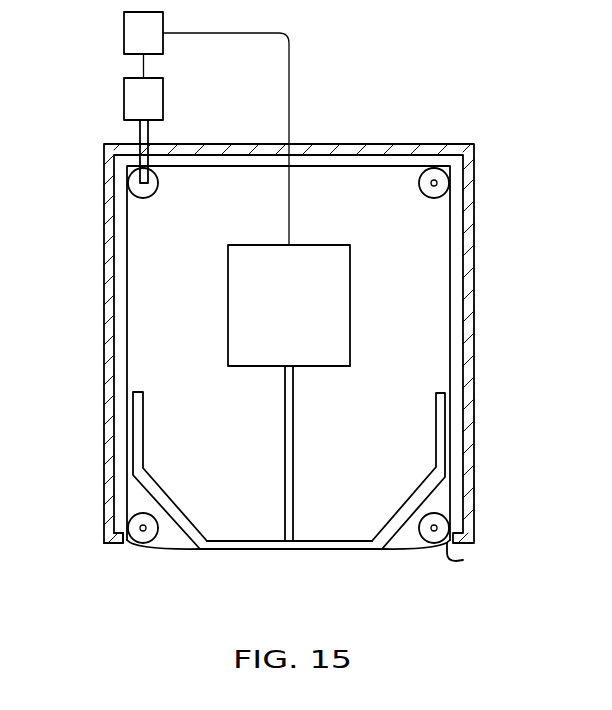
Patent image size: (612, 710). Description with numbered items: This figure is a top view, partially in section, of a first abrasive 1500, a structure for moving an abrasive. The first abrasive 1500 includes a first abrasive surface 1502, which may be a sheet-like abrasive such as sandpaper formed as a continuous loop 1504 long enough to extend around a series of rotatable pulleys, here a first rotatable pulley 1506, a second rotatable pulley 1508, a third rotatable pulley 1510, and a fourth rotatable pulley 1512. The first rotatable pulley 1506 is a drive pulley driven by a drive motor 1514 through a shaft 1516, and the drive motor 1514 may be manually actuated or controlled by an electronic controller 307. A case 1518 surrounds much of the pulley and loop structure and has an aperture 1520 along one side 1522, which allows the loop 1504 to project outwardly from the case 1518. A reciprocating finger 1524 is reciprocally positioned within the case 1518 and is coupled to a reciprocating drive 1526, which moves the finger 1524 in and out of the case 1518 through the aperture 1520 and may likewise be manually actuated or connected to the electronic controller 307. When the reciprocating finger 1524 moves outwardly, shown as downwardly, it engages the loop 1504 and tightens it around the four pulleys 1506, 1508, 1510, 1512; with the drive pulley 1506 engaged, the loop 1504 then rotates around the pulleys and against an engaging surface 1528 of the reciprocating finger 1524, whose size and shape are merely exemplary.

The electronic controller 307 is at (130, 32).
The first abrasive 1500 is at (294, 319).
The first abrasive surface 1502 is at (230, 549).
The continuous loop 1504 is at (400, 166).
The first rotatable pulley 1506 is at (131, 194).
The second rotatable pulley 1508 is at (446, 183).
The third rotatable pulley 1510 is at (447, 528).
The fourth rotatable pulley 1512 is at (143, 539).
The drive motor 1514 is at (130, 106).
The drive shaft 1516 is at (143, 183).
The case 1518 is at (468, 365).
The aperture 1520 is at (463, 560).
The side 1522 is at (112, 552).
The reciprocating finger 1524 is at (327, 541).
The reciprocating drive 1526 is at (330, 245).
The engaging surface 1528 is at (338, 551).